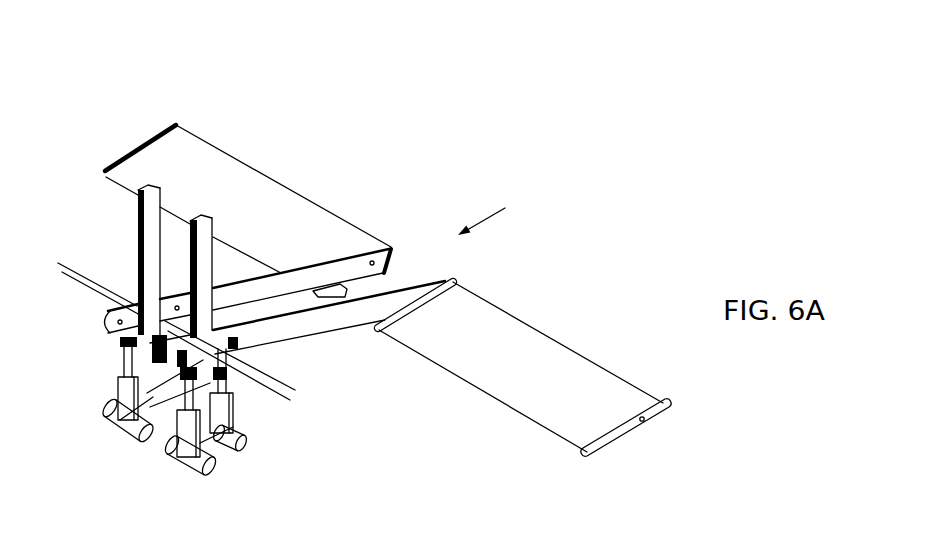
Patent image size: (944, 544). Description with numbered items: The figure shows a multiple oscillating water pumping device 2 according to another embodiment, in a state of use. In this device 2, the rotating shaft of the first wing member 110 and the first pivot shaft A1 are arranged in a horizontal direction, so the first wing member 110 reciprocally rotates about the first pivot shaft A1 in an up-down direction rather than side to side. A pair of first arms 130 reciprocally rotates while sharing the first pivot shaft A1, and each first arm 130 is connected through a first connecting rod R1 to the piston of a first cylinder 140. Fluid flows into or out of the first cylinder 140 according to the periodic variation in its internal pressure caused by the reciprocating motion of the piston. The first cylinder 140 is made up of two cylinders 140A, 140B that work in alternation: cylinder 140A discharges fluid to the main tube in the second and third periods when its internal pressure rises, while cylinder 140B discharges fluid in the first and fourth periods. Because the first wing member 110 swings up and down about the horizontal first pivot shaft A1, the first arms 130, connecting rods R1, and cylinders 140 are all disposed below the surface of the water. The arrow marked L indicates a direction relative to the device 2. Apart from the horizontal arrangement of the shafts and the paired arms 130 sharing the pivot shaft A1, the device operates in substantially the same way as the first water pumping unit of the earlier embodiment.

The multiple oscillating water pumping device 2 is at (550, 158).
The first wing member 110 is at (272, 200).
The first arm 130 is at (353, 264).
The first cylinder 140 is at (236, 422).
The (1-1)th cylinder 140A is at (238, 417).
The (1-2)th cylinder 140B is at (218, 473).
The first pivot shaft A1 is at (90, 268).
The first connecting rod R1 is at (248, 353).
The longitudinal direction L is at (481, 209).